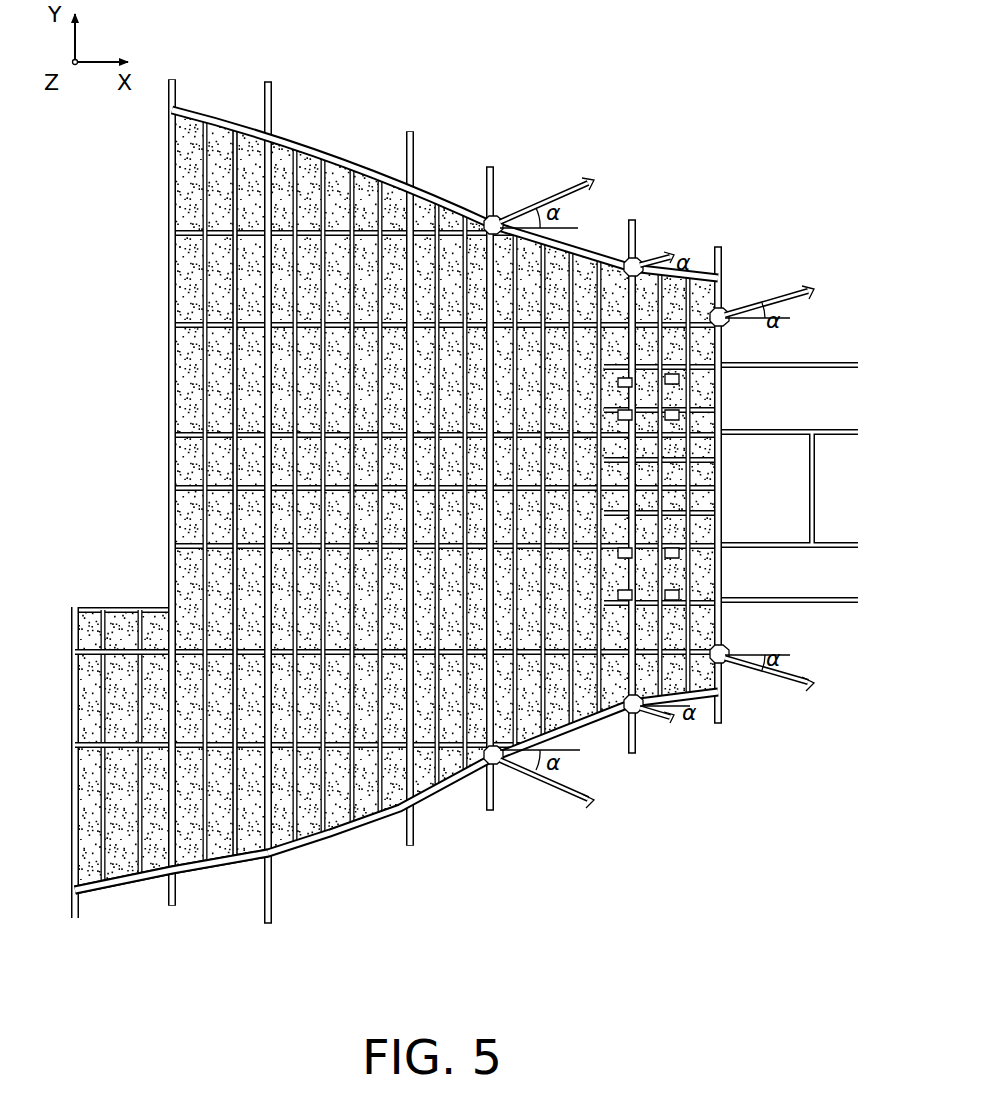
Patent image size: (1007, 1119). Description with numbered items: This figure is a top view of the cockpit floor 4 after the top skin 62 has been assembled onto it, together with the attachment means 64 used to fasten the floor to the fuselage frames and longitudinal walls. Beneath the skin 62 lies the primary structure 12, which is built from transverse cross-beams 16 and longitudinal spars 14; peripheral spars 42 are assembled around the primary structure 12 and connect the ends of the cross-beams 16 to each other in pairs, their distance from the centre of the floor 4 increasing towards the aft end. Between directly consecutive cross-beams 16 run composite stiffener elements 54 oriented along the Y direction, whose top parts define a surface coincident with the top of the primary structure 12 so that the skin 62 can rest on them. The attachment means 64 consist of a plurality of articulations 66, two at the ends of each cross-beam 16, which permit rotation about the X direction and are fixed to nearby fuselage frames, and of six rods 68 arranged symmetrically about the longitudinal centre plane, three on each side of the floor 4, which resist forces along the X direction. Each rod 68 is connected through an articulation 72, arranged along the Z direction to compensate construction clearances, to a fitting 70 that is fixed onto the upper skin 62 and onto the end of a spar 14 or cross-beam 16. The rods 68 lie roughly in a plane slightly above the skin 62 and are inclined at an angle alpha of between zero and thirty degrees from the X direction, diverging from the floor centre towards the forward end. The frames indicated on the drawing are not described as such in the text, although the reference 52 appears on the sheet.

The cockpit floor 4 is at (118, 432).
The primary structure 12 is at (166, 826).
The spar 14 is at (166, 308).
The cross-beam 16 is at (420, 253).
The peripheral spar 42 is at (365, 878).
The frame 52 is at (466, 489).
The stiffener element 54 is at (140, 728).
The skin 62 is at (253, 278).
The attachment means 64 is at (470, 40).
The articulation 66 is at (490, 167).
The rod 68 is at (757, 296).
The fitting 70 is at (483, 595).
The articulation 72 is at (628, 376).